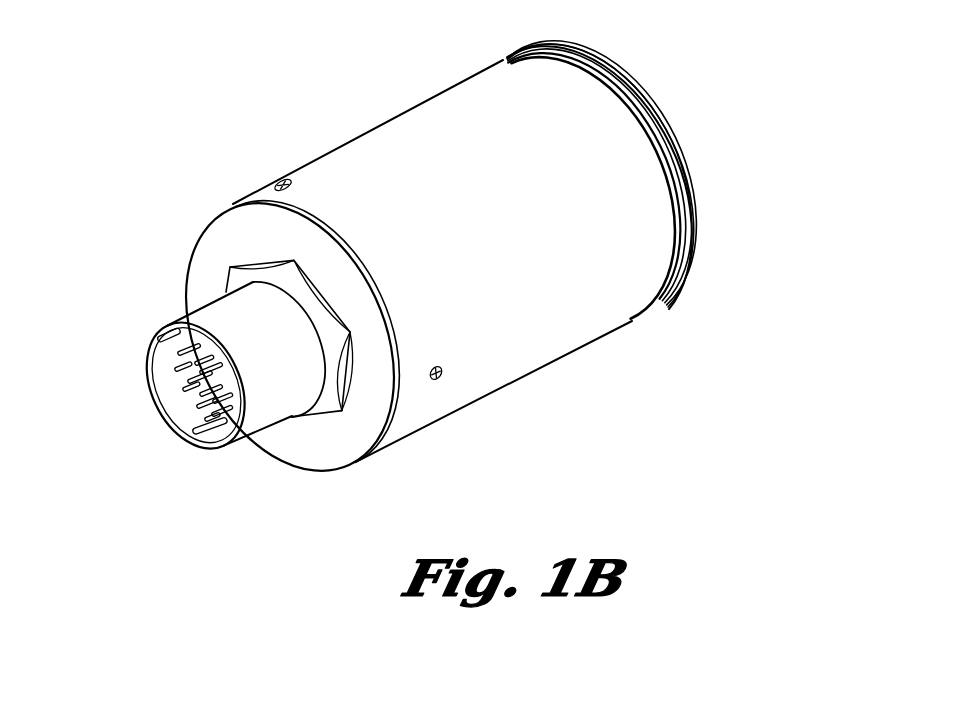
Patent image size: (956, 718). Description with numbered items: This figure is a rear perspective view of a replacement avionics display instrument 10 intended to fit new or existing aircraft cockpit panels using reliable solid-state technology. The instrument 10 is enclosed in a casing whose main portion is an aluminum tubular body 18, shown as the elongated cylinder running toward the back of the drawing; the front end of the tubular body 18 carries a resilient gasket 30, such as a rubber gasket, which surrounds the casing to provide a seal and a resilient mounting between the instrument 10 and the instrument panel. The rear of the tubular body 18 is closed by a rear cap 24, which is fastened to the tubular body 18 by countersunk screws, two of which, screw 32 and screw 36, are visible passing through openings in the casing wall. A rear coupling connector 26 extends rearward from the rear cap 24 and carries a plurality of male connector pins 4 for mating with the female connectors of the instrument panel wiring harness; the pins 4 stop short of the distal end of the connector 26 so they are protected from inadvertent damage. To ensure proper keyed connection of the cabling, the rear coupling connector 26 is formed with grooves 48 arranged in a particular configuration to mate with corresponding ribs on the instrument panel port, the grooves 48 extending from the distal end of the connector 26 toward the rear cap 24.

The replacement avionics display instrument 10 is at (347, 102).
The tubular body 18 is at (405, 424).
The rear cap 24 is at (200, 258).
The rear coupling connector 26 is at (181, 401).
The resilient gasket 30 is at (692, 212).
The countersunk screw 32 is at (441, 381).
The countersunk screw 36 is at (277, 181).
The contact pins 4 is at (195, 389).
The grooves 48 is at (162, 334).